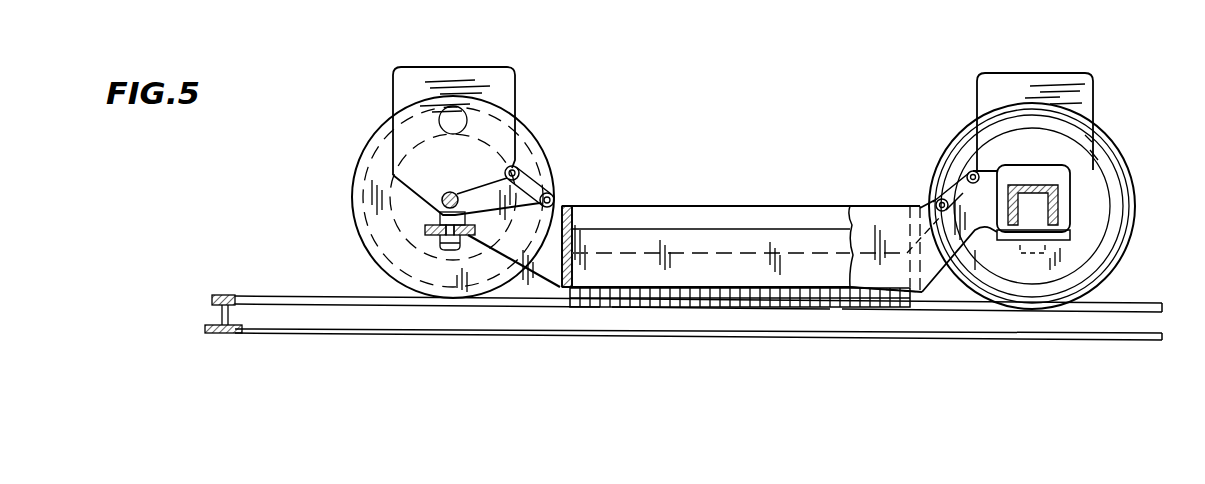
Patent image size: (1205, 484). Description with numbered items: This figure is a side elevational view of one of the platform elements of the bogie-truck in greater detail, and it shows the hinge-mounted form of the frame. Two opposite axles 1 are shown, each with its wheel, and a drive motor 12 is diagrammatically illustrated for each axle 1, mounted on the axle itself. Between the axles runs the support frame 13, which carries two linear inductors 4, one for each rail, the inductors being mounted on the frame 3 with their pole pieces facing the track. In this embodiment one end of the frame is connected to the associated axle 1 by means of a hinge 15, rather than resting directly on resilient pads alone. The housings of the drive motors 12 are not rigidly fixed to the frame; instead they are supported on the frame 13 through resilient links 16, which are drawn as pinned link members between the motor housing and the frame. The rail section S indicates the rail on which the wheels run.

The axle 1 is at (443, 197).
The support frame 3 is at (705, 308).
The linear inductor 4 is at (872, 207).
The drive motor 12 is at (393, 80).
The support frame 13 is at (715, 206).
The hinge 15 is at (440, 226).
The resilient links 16 is at (520, 175).
The rail section S is at (232, 340).